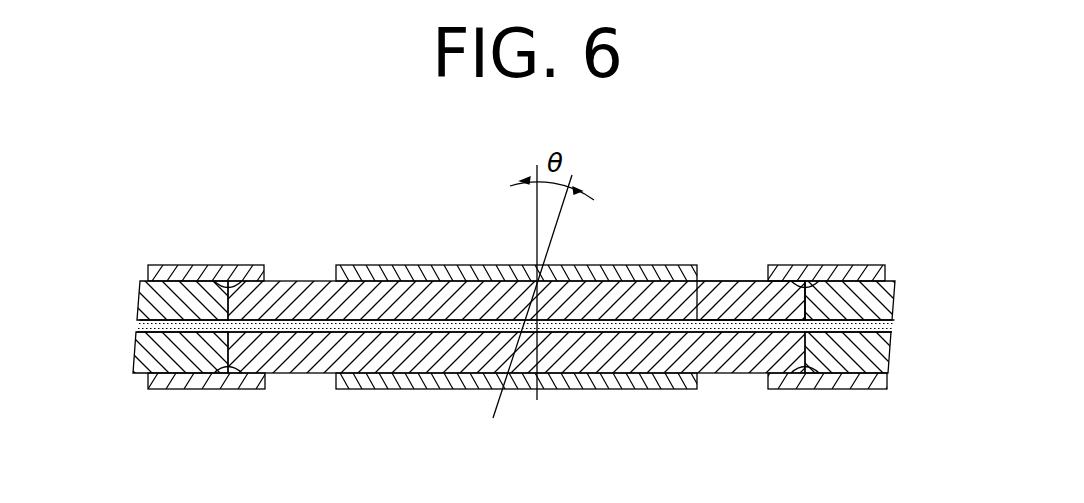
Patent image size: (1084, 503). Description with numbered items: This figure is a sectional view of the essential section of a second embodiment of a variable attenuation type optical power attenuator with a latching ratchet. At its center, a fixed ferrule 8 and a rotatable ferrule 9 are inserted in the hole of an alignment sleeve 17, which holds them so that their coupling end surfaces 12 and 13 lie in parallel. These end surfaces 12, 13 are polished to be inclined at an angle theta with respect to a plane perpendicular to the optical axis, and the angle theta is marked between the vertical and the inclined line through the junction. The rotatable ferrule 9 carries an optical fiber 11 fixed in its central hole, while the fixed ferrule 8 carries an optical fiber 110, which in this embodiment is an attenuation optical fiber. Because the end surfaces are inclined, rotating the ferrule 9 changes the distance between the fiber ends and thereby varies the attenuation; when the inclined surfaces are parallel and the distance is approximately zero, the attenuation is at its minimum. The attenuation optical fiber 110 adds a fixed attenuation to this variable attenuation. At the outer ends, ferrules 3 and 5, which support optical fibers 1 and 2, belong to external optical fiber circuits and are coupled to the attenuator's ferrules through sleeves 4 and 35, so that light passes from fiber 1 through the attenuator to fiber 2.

The optical fiber 1 is at (135, 350).
The optical fiber 2 is at (890, 362).
The ferrule with optical fiber 3 is at (140, 295).
The sleeve 4 is at (205, 272).
The ferrule with optical fiber 5 is at (893, 292).
The fixed ferrule 8 is at (298, 295).
The rotatable ferrule 9 is at (737, 293).
The optical fiber 11 is at (723, 328).
The coupling end surface 12 is at (520, 355).
The coupling end surface 13 is at (522, 285).
The alignment sleeve 17 is at (632, 265).
The sleeve 35 is at (830, 270).
The attenuation optical fiber 110 is at (303, 330).